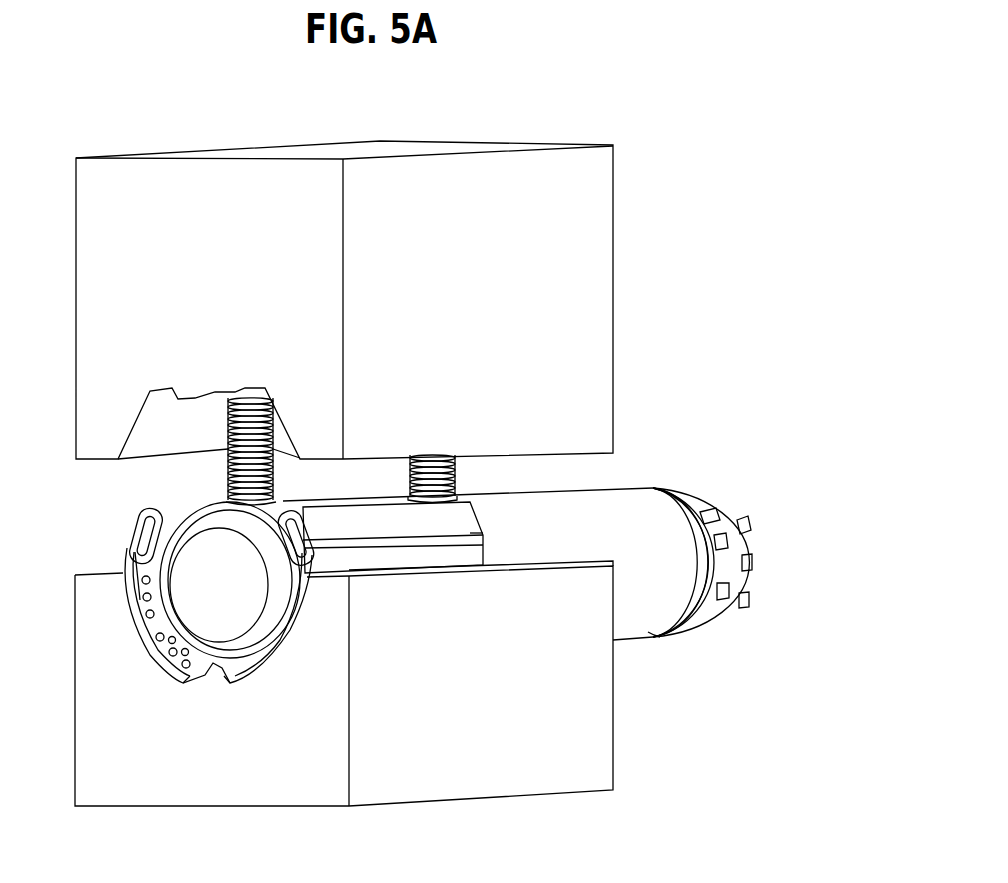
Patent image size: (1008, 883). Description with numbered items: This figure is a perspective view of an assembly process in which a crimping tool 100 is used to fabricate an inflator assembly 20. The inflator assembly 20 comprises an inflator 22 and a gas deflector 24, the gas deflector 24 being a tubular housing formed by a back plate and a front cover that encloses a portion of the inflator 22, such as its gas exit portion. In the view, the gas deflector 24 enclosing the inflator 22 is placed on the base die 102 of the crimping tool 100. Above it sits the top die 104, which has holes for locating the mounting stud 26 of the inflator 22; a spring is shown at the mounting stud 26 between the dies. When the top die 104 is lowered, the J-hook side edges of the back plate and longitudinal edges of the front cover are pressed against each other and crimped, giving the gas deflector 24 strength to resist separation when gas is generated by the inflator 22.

The crimping tool 100 is at (665, 123).
The top die 104 is at (604, 293).
The base die 102 is at (458, 787).
The inflator assembly 20 is at (683, 452).
The inflator 22 is at (643, 630).
The gas deflector 24 is at (125, 542).
The mounting stud 26 is at (228, 473).